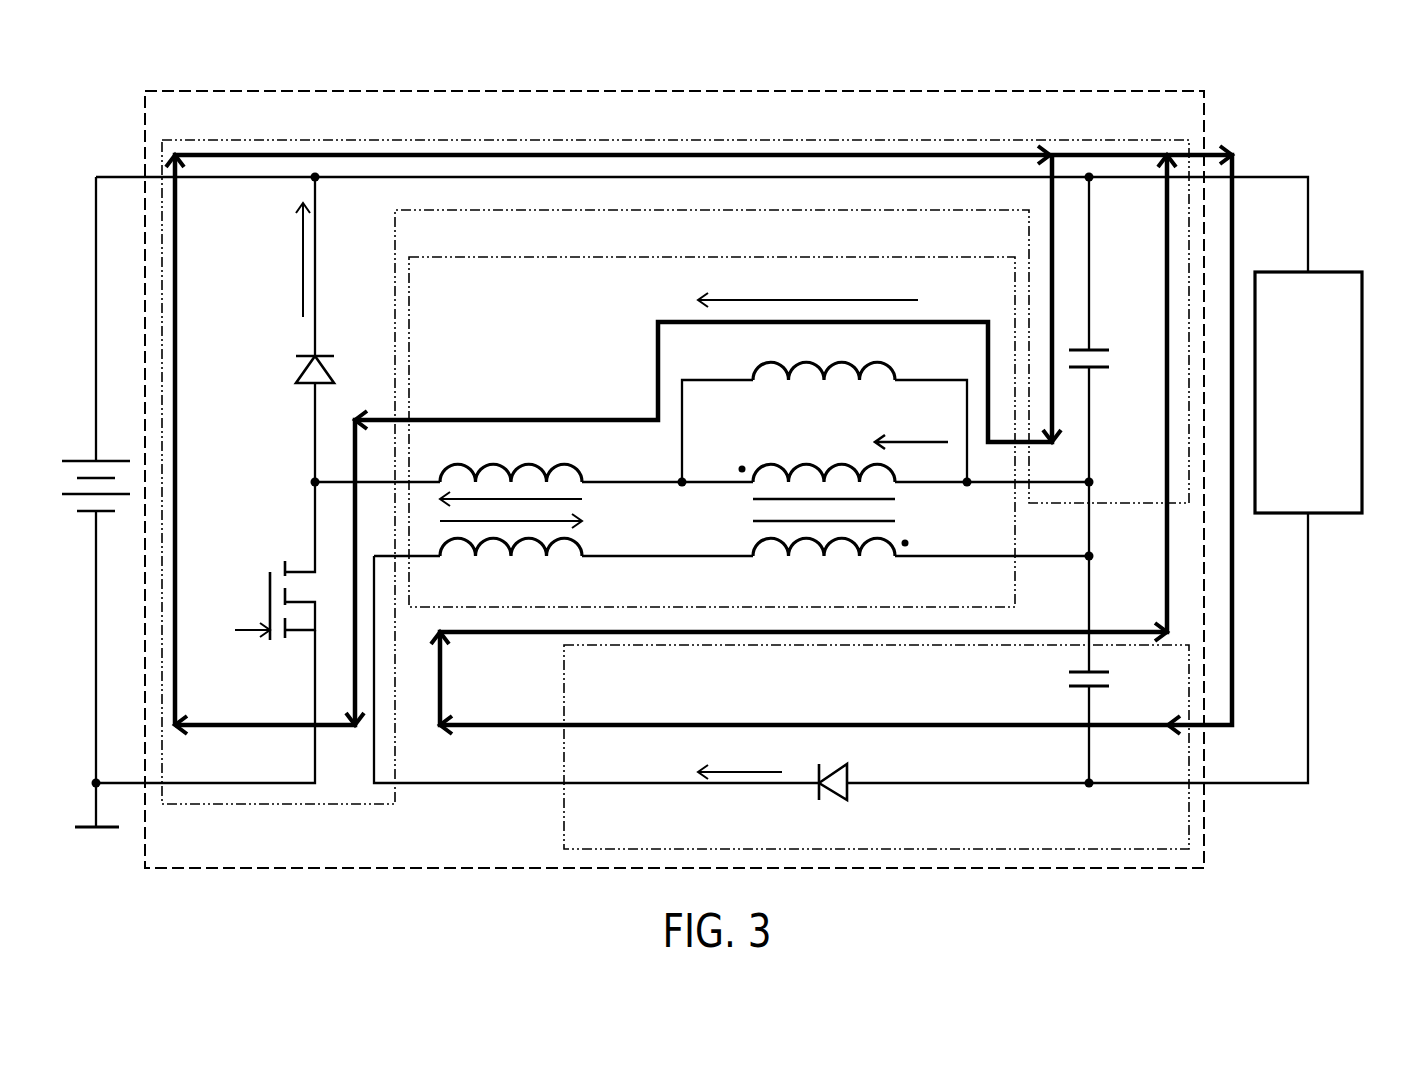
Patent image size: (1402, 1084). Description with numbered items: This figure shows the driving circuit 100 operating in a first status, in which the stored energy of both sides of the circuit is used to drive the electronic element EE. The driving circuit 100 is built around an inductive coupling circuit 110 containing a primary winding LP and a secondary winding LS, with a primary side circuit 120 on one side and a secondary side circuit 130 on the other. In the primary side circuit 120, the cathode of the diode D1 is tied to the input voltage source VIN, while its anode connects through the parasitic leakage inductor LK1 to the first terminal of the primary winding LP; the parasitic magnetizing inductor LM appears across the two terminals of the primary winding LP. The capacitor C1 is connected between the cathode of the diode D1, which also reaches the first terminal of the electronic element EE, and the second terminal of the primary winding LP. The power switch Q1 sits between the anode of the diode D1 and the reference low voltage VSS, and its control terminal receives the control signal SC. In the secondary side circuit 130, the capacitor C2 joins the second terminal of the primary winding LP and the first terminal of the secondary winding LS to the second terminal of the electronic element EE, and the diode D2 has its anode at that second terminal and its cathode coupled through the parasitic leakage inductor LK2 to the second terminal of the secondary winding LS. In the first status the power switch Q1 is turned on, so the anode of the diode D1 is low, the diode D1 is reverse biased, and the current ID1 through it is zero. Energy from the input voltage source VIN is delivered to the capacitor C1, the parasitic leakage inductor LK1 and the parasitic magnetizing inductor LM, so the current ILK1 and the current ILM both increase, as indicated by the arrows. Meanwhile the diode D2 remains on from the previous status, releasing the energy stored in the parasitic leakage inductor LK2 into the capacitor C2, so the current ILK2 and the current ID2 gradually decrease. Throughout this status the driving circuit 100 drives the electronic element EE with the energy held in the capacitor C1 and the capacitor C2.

The driving circuit 100 is at (1142, 91).
The inductive coupling circuit 110 is at (930, 257).
The primary side circuit 120 is at (1124, 140).
The secondary side circuit 130 is at (565, 835).
The input voltage source VIN is at (73, 486).
The reference low voltage VSS is at (97, 845).
The diode D1 is at (295, 371).
The current flowing through diode D1 ID1 is at (287, 260).
The power switch Q1 is at (258, 600).
The control signal SC is at (234, 630).
The parasitic leakage inductor LK1 is at (511, 455).
The parasitic leakage inductor LK2 is at (511, 566).
The current flowing through parasitic leakage inductor LK1 ILK1 is at (537, 499).
The current flowing through parasitic leakage inductor LK2 ILK2 is at (537, 521).
The parasitic magnetizing inductor LM is at (824, 354).
The current flowing through parasitic magnetizing inductor LM ILM is at (830, 300).
The primary winding LP is at (844, 474).
The secondary winding LS is at (831, 566).
The capacitor C1 is at (1109, 358).
The capacitor C2 is at (1109, 680).
The diode D2 is at (834, 803).
The current flowing through diode D2 ID2 is at (740, 758).
The electronic element EE is at (1332, 272).